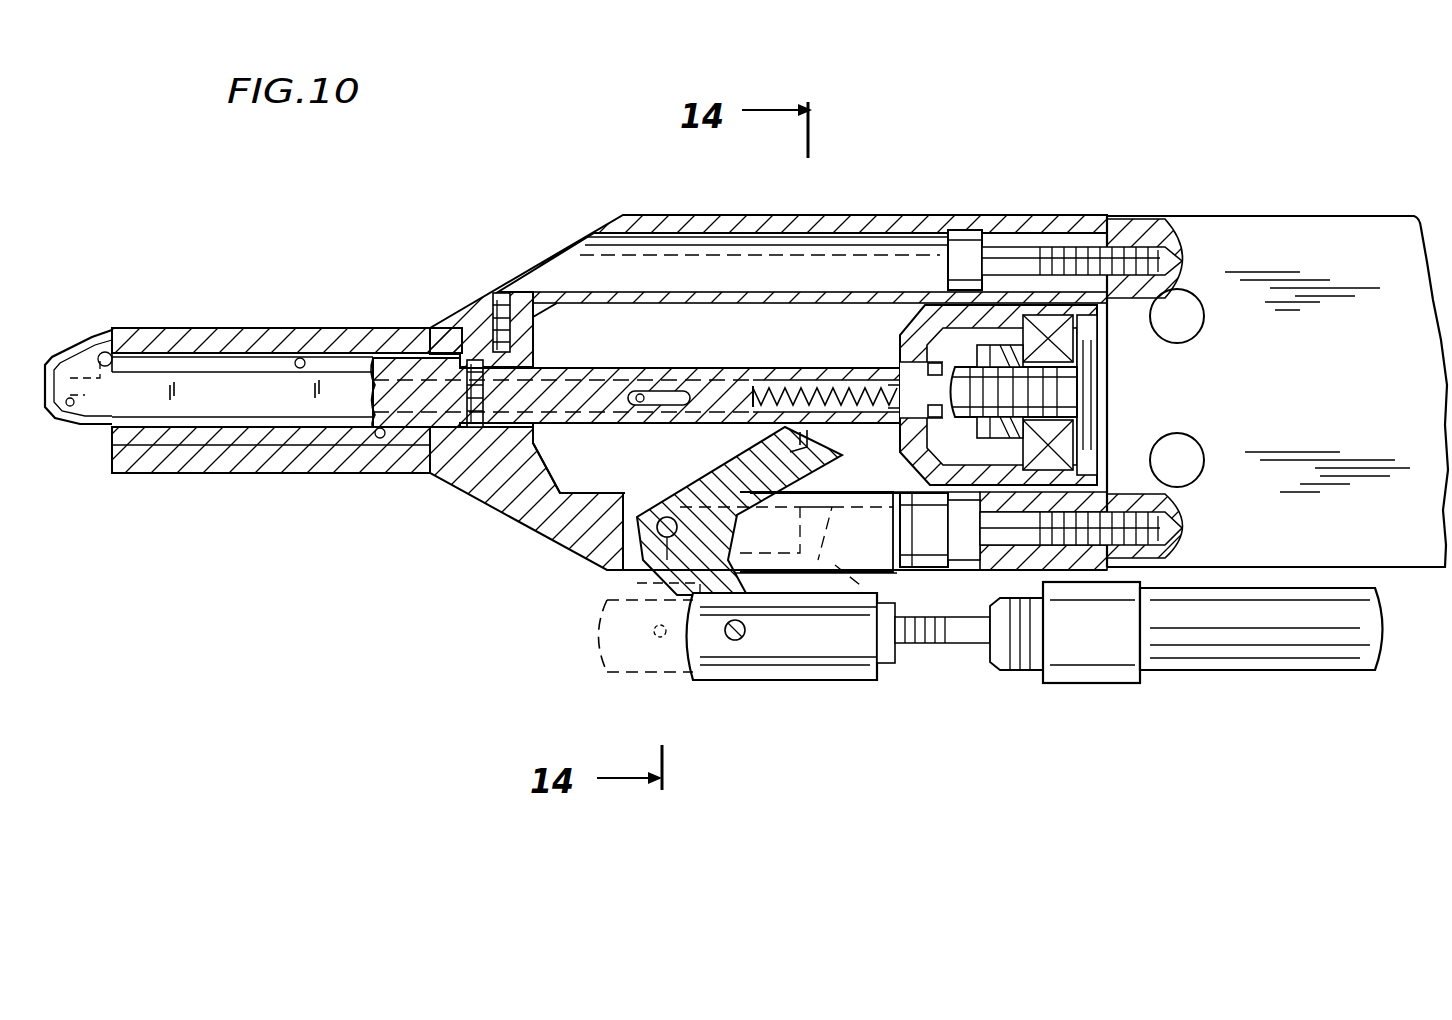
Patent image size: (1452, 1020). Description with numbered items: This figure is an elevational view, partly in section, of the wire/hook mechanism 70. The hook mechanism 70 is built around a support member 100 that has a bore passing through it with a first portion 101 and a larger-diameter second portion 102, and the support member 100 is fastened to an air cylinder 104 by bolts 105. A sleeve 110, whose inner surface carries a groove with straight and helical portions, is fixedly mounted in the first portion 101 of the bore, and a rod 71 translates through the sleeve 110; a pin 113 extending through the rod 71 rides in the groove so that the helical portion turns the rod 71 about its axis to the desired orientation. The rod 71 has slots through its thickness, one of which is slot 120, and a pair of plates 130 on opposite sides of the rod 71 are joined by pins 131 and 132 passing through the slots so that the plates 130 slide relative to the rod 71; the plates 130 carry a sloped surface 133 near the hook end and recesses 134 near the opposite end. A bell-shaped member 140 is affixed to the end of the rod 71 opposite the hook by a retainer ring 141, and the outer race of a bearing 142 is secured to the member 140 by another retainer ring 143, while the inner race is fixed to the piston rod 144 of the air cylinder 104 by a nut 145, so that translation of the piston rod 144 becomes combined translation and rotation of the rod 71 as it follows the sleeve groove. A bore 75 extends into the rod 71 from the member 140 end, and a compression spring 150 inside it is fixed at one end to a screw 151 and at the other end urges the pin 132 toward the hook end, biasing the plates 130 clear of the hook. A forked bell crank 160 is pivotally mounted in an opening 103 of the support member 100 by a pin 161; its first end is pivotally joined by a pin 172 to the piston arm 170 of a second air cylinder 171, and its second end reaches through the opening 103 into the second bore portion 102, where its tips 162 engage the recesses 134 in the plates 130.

The hook mechanism 70 is at (1312, 215).
The rod 71 is at (70, 428).
The bore 75 is at (707, 405).
The support member 100 is at (714, 190).
The first portion of bore 101 is at (235, 345).
The second portion of bore 102 is at (567, 323).
The opening 103 is at (867, 573).
The air cylinder 104 is at (1212, 215).
The bolts 105 is at (963, 230).
The sleeve 110 is at (273, 440).
The pin 113 is at (470, 357).
The slot 120 is at (88, 335).
The plates 130 is at (153, 410).
The pin 131 is at (58, 408).
The pin 132 is at (640, 390).
The sloped surface 133 is at (105, 352).
The recesses 134 is at (825, 378).
The bell-shaped member 140 is at (913, 320).
The retainer ring 141 is at (933, 407).
The bearing 142 is at (1067, 342).
The retainer ring 143 is at (1090, 466).
The piston rod 144 is at (1053, 390).
The nut 145 is at (1003, 350).
The compression spring 150 is at (760, 387).
The screw 151 is at (913, 373).
The forked bell crank 160 is at (672, 545).
The pin 161 is at (618, 548).
The tips 162 is at (855, 420).
The piston arm 170 is at (867, 673).
The air cylinder 171 is at (1213, 663).
The pin 172 is at (738, 640).